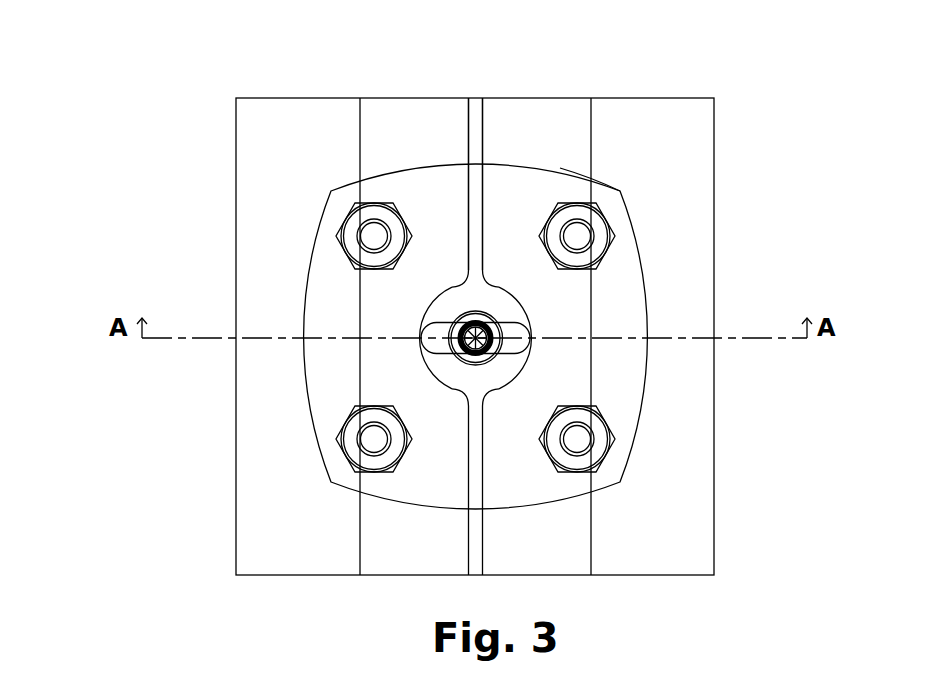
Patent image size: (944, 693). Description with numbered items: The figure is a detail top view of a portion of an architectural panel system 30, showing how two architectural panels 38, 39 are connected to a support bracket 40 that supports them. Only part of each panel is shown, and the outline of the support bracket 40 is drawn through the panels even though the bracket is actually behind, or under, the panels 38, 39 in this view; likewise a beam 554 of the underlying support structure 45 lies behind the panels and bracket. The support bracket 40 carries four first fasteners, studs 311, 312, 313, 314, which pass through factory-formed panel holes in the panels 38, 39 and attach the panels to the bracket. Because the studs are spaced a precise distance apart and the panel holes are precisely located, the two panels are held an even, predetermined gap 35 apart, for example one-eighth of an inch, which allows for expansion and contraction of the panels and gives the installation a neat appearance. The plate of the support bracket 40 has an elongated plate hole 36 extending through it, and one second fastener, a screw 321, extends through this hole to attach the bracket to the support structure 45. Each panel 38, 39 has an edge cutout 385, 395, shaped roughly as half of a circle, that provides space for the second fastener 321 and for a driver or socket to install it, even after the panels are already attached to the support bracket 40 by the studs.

The architectural panel system 30 is at (391, 296).
The architectural panel 38 is at (287, 295).
The architectural panel 39 is at (723, 298).
The gap 35 is at (425, 295).
The support bracket 40 is at (528, 142).
The support structure 45 is at (580, 288).
The beam 554 is at (713, 159).
The first fastener 311 is at (236, 179).
The first fastener 312 is at (703, 228).
The first fastener 313 is at (236, 468).
The first fastener 314 is at (703, 468).
The elongated plate hole 36 is at (299, 257).
The edge cutout 385 is at (256, 380).
The edge cutout 395 is at (683, 380).
The second fastener 321 is at (658, 306).